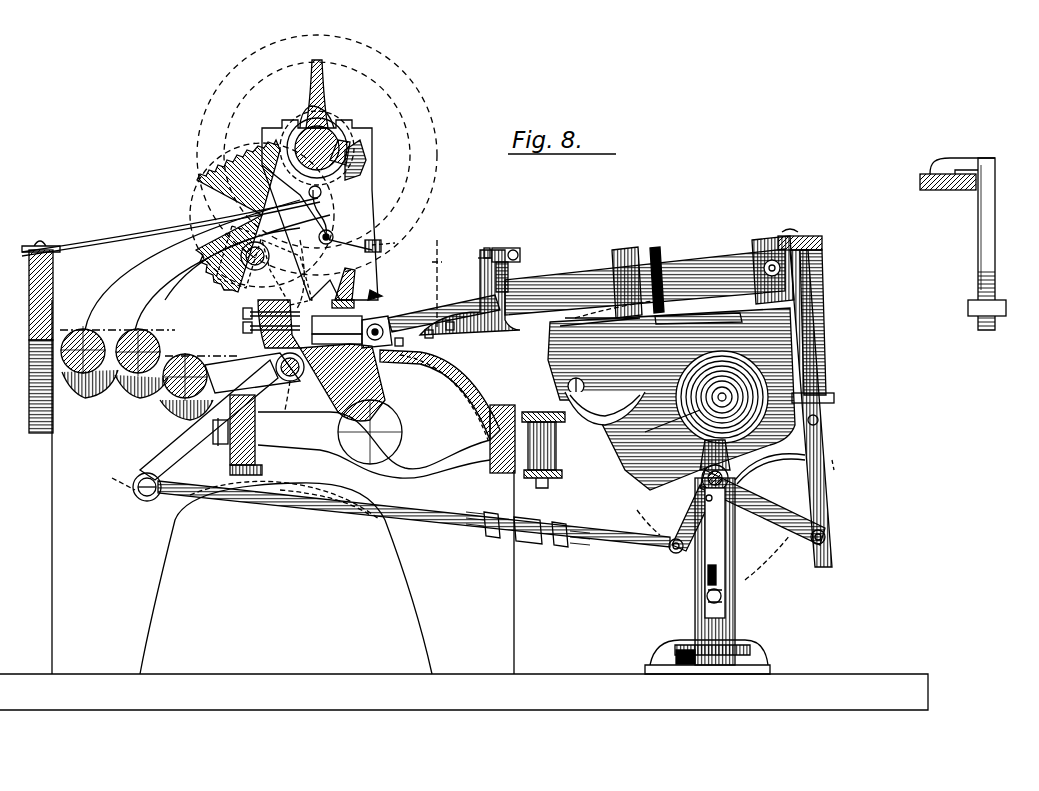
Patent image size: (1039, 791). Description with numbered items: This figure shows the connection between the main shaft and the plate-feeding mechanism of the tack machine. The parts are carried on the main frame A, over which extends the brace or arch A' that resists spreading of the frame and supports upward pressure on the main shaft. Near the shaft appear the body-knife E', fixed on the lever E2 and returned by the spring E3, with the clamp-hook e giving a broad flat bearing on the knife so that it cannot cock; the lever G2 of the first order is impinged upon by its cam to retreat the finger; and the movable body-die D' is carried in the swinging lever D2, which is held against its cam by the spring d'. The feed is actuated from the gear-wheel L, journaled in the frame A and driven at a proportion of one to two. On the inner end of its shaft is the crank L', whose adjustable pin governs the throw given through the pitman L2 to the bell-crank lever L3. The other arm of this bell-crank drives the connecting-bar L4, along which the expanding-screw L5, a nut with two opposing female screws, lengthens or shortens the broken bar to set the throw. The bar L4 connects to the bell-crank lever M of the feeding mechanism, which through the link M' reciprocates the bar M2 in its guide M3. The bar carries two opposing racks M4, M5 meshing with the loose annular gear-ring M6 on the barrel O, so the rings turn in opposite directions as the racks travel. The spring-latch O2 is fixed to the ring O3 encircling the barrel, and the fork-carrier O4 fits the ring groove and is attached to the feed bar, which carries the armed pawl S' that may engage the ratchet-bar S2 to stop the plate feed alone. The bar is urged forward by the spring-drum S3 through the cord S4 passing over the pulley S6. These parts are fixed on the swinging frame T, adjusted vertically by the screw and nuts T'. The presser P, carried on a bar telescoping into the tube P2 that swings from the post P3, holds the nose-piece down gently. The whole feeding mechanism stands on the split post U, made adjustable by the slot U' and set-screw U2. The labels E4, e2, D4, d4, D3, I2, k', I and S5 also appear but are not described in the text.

The main frame A is at (464, 505).
The brace or arch A' is at (317, 155).
The body-knife E' is at (351, 243).
The lever E2 is at (195, 310).
The spring E3 is at (171, 315).
The bracket (detail) E4 is at (918, 190).
The clamp-hook e is at (380, 247).
The adjusting screw rod (detail) e2 is at (987, 244).
The lever G2 is at (380, 192).
The gear-wheel L is at (262, 216).
The crank L' is at (242, 257).
The pitman L2 is at (287, 275).
The bell-crank lever L3 is at (222, 416).
The connecting-bar L4 is at (391, 516).
The expanding-screw L5 is at (528, 534).
The clamp block D4 is at (270, 321).
The clamp screws d4 is at (263, 320).
The knife holder D3 is at (344, 288).
The movable body-die D' is at (337, 330).
The spring d' is at (359, 333).
The swinging lever D2 is at (342, 382).
The guide bar I2 is at (443, 320).
The guide arc k' is at (440, 395).
The cam plate I is at (351, 436).
The screw and nuts T' is at (535, 446).
The presser P is at (474, 287).
The tube P2 is at (506, 260).
The post P3 is at (477, 262).
The barrel O is at (645, 282).
The spring-latch O2 is at (662, 245).
The ring O3 is at (620, 281).
The fork-carrier O4 is at (617, 311).
The armed pawl S' is at (698, 312).
The swinging frame T is at (671, 363).
The pulley S6 is at (576, 393).
The cord S4 is at (605, 406).
The spring arbor S5 is at (688, 409).
The ratchet-bar S2 is at (695, 465).
The spring-drum S3 is at (728, 397).
The bell-crank lever M is at (676, 519).
The link M' is at (770, 471).
The bar M2 is at (801, 415).
The guide M3 is at (826, 466).
The rack M4 is at (826, 376).
The rack M5 is at (836, 352).
The annular gear-ring M6 is at (832, 300).
The post U is at (707, 576).
The slot U' is at (728, 575).
The set-screw U2 is at (720, 596).